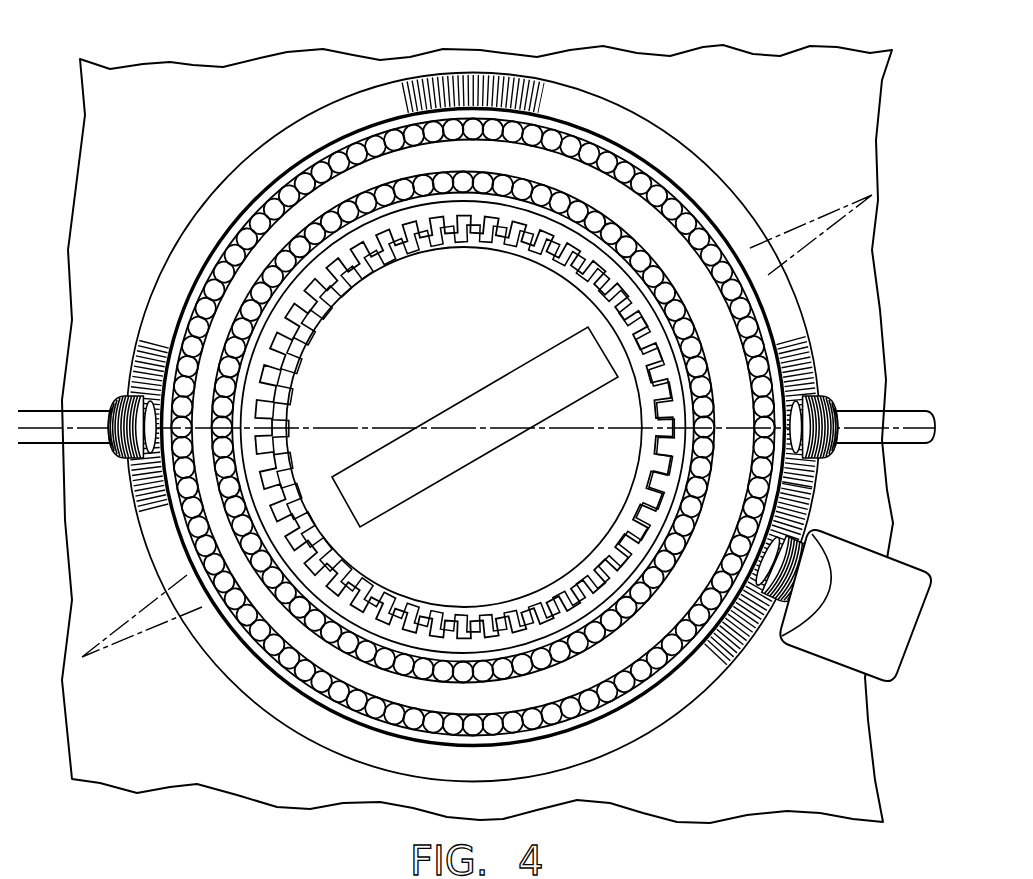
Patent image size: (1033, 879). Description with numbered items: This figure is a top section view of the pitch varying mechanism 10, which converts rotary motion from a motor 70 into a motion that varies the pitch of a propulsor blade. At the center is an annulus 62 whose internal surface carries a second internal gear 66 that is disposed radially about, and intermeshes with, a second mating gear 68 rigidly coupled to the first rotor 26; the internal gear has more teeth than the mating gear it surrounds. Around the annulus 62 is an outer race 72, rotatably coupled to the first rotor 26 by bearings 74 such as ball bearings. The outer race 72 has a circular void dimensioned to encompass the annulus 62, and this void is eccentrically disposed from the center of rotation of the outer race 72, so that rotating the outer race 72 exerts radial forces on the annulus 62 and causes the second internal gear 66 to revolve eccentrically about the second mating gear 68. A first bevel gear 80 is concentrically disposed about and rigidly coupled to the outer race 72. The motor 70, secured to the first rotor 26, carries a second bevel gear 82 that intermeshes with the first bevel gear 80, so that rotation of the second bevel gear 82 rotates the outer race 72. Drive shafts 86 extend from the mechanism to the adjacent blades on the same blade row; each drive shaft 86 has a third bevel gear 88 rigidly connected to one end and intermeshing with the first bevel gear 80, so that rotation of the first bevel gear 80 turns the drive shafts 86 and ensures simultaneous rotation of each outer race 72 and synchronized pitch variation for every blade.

The pitch varying mechanism 10 is at (204, 192).
The first rotor 26 is at (746, 782).
The annulus 62 is at (603, 254).
The second internal gear 66 is at (260, 404).
The second mating gear 68 is at (365, 273).
The motor 70 is at (880, 615).
The outer race 72 is at (752, 440).
The bearings 74 is at (490, 130).
The first bevel gear 80 is at (484, 74).
The second bevel gear 82 is at (800, 628).
The drive shafts 86 is at (50, 421).
The third bevel gear 88 is at (121, 451).